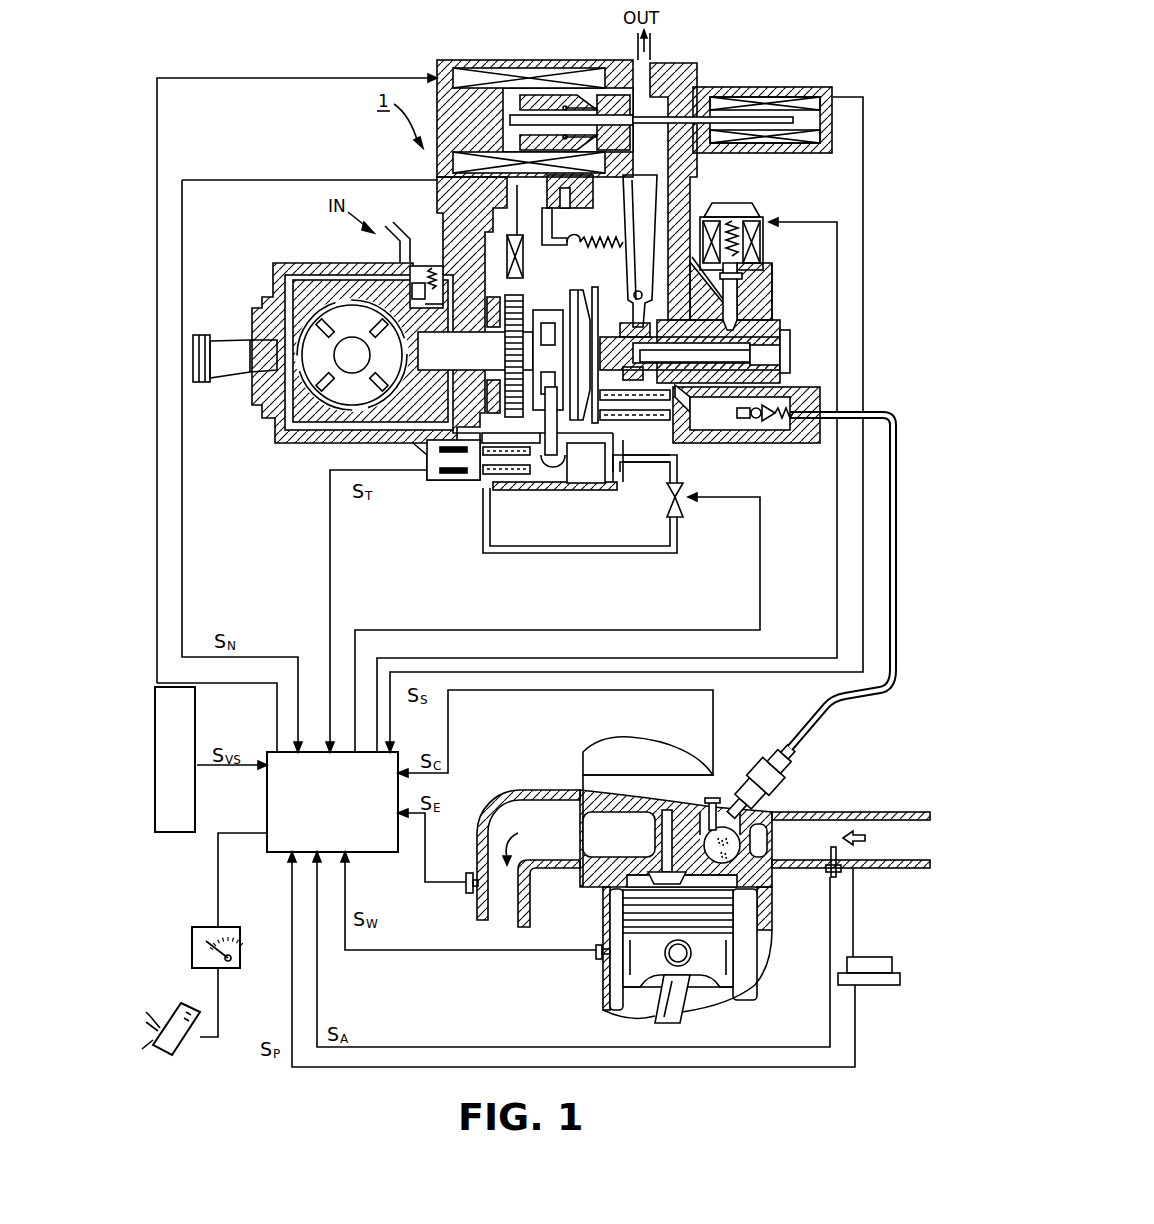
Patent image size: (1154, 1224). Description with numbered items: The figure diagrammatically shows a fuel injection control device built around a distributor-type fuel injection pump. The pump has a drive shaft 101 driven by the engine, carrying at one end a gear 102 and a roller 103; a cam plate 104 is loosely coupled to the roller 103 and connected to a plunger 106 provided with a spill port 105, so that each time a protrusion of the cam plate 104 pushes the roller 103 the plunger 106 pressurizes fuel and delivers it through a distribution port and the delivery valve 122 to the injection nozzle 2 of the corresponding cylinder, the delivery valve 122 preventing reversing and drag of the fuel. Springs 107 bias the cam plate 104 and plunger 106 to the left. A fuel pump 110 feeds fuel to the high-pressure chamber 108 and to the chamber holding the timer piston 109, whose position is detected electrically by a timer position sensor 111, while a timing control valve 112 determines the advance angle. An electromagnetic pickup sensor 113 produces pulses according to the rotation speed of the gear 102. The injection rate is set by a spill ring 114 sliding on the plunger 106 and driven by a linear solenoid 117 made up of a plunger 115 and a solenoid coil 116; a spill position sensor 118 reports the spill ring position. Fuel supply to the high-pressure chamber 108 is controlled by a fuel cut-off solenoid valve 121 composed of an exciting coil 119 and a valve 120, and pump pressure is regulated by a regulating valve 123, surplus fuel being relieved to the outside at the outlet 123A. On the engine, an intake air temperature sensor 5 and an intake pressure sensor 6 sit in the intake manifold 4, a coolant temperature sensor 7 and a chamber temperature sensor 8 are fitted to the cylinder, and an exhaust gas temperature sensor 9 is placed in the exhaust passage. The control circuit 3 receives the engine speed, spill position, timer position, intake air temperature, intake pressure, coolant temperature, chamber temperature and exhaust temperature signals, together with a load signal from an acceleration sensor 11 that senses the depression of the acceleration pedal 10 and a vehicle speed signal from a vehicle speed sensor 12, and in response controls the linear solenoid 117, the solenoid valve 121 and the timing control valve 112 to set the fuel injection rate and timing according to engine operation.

The injection nozzles 2 is at (752, 762).
The control circuit 3 is at (383, 852).
The intake manifold 4 is at (811, 812).
The intake air temperature sensor 5 is at (827, 875).
The intake pressure sensor 6 is at (874, 957).
The coolant temperature sensor 7 is at (598, 944).
The chamber temperature sensor 8 is at (706, 808).
The exhaust gas sensor 9 is at (467, 886).
The acceleration pedal 10 is at (178, 1058).
The acceleration sensor 11 is at (240, 950).
The vehicle speed sensor 12 is at (197, 719).
The drive shaft 101 is at (228, 368).
The gear 102 is at (515, 303).
The roller 103 is at (553, 405).
The cam plate 104 is at (582, 440).
The spill port 105 is at (645, 360).
The plunger 106 is at (745, 333).
The springs 107 is at (657, 367).
The high-pressure chamber 108 is at (787, 345).
The timer piston 109 is at (618, 472).
The fuel pump 110 is at (395, 368).
The timer position sensor 111 is at (446, 473).
The timing control valve 112 is at (686, 504).
The electromagnetic pickup sensor 113 is at (533, 254).
The spill ring 114 is at (620, 327).
The plunger 115 is at (617, 95).
The solenoid coil 116 is at (550, 66).
The linear solenoid 117 is at (535, 92).
The spill position sensor 118 is at (748, 97).
The exciting coil 119 is at (766, 243).
The valve 120 is at (737, 290).
The fuel cut-off solenoid valve 121 is at (733, 196).
The delivery valve 122 is at (790, 400).
The regulating valve 123 is at (414, 268).
The outlet port 123A is at (651, 60).